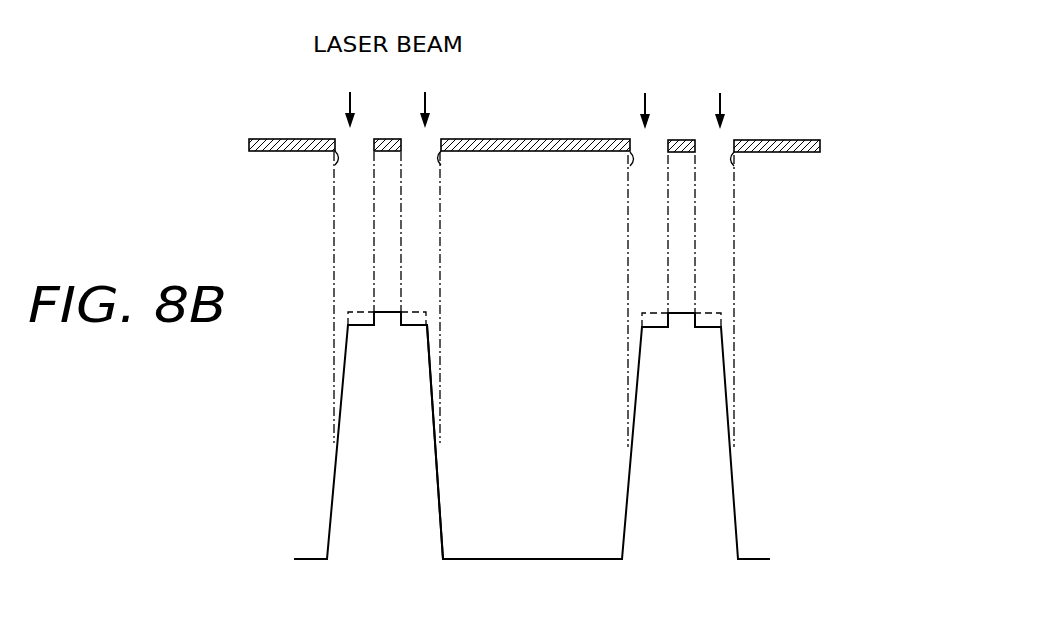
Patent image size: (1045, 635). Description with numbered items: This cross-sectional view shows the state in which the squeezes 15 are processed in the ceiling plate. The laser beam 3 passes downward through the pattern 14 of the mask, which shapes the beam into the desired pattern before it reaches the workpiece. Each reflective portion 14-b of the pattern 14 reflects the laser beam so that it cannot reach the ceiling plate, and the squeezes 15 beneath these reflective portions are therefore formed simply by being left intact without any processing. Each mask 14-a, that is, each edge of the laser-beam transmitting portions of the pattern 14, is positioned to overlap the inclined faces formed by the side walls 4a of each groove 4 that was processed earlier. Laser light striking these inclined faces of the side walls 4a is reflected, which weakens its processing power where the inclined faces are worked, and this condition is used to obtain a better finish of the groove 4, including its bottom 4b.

The laser beam 3 is at (424, 108).
The pattern of the mask 14 is at (648, 142).
The mask 14-a is at (335, 168).
The reflective portion 14-b is at (378, 152).
The squeeze 15 is at (678, 318).
The groove 4 is at (516, 537).
The side wall 4a is at (437, 489).
The bottom surface 4b is at (575, 562).